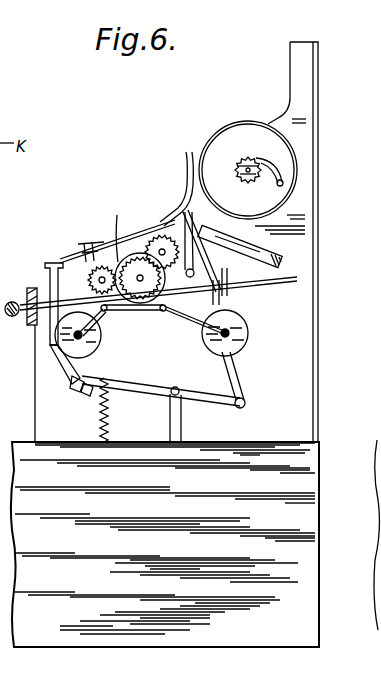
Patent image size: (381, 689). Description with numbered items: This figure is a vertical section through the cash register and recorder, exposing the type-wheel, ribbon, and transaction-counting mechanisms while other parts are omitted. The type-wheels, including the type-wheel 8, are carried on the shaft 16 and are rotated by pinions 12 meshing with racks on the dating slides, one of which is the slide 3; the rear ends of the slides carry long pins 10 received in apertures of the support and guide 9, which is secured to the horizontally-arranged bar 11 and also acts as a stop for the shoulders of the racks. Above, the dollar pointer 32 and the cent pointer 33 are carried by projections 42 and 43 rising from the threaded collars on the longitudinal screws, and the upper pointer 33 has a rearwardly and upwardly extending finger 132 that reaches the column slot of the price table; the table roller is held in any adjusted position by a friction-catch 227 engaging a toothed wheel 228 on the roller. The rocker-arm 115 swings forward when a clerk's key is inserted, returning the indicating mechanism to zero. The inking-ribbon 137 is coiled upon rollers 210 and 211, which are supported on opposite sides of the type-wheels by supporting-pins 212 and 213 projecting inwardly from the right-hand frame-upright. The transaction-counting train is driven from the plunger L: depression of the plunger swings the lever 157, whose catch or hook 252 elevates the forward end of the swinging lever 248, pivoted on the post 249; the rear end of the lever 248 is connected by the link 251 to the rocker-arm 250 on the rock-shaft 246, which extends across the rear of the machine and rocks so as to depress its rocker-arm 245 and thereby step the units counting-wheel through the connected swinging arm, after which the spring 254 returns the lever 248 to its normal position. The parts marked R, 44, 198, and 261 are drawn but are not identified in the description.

The ribbon spool R is at (290, 160).
The toothed wheel 228 is at (249, 184).
The friction-catch 227 is at (285, 172).
The finger or pointer 132 is at (186, 160).
The projection 43 is at (163, 222).
The rocker-arm 115 is at (182, 228).
The slide 3 is at (210, 262).
The rocker-arm 245 is at (252, 233).
The pin 261 is at (223, 234).
The rocker-arm 250 is at (285, 219).
The rock-shaft 246 is at (284, 261).
The shaft 16 is at (140, 281).
The finger or pointer 32 is at (92, 245).
The finger or pointer 33 is at (140, 240).
The type-wheel 8 is at (117, 239).
The pinion 12 is at (123, 231).
The projection 42 is at (94, 260).
The post 44 is at (54, 298).
The plunger L is at (40, 283).
The swinging lever 157 is at (56, 362).
The long pins 10 is at (277, 283).
The horizontally-arranged bar 11 is at (221, 299).
The support and guide 9 is at (228, 280).
The supporting-pin 212 is at (107, 312).
The supporting-pin 213 is at (162, 313).
The link 198 is at (180, 311).
The inking-ribbon 137 is at (194, 322).
The roller 211 is at (222, 356).
The link 251 is at (240, 383).
The roller 210 is at (74, 376).
The catch or hook 252 is at (88, 397).
The post 249 is at (183, 426).
The swinging lever 248 is at (117, 410).
The spring 254 is at (130, 428).